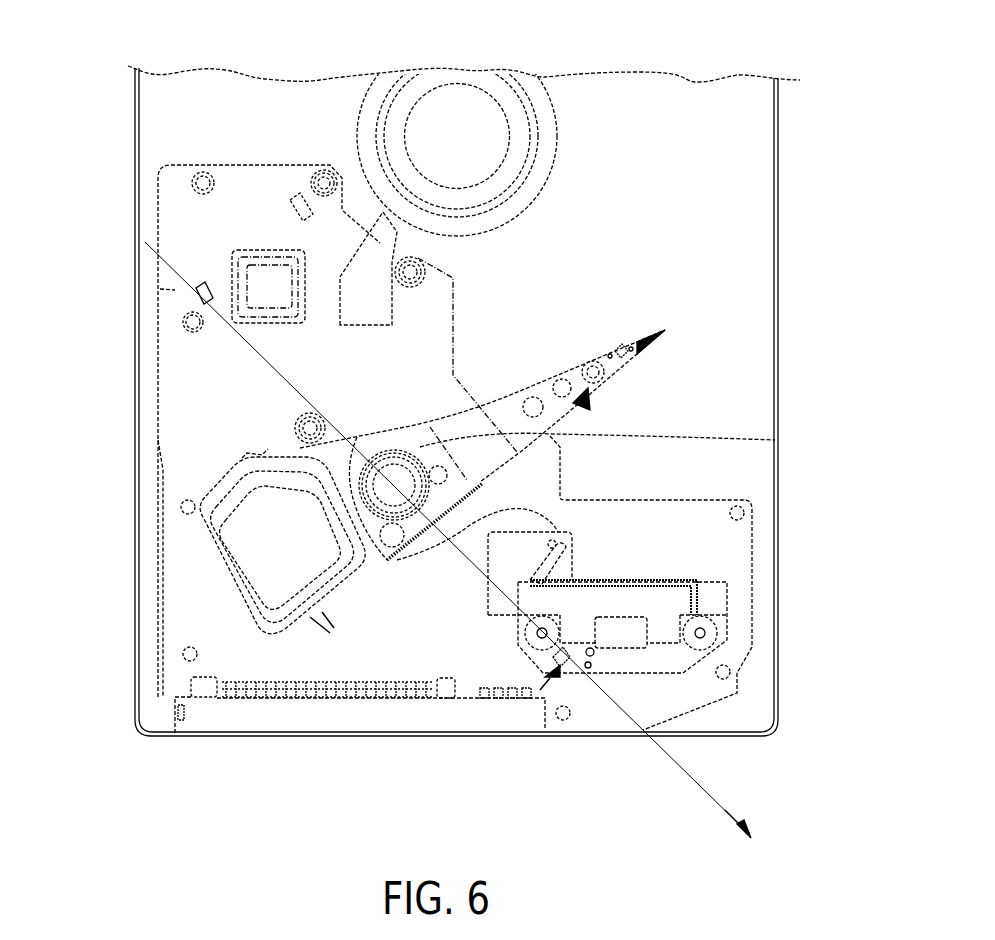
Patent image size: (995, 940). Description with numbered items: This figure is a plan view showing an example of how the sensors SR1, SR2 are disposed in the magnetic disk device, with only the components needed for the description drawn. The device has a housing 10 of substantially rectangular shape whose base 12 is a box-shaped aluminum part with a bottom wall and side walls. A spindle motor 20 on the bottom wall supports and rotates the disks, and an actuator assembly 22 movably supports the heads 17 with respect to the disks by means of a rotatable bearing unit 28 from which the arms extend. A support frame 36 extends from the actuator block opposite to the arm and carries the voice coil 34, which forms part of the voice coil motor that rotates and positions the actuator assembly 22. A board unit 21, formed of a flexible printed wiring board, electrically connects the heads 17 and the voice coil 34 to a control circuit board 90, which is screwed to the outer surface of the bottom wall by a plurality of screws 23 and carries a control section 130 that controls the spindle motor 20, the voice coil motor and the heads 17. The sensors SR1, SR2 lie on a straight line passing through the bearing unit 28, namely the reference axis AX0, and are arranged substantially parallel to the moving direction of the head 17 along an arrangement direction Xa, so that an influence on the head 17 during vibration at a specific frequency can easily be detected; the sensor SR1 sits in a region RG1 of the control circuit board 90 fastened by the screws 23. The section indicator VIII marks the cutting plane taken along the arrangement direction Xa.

The housing 10 is at (828, 78).
The base 12 is at (795, 212).
The head 17 is at (671, 345).
The spindle motor 20 is at (482, 80).
The board unit 21 is at (745, 578).
The actuator assembly 22 is at (502, 390).
The screws 23 is at (204, 176).
The bearing unit 28 is at (775, 440).
The voice coil 34 is at (210, 550).
The support frame 36 is at (197, 493).
The control circuit board 90 is at (142, 688).
The control section 130 is at (268, 249).
The sensor SR1 is at (211, 287).
The sensor SR2 is at (545, 678).
The reference axis AX0 is at (394, 485).
The region RG1 is at (165, 289).
The arrangement direction Xa is at (749, 817).
The section line VIII is at (103, 207).